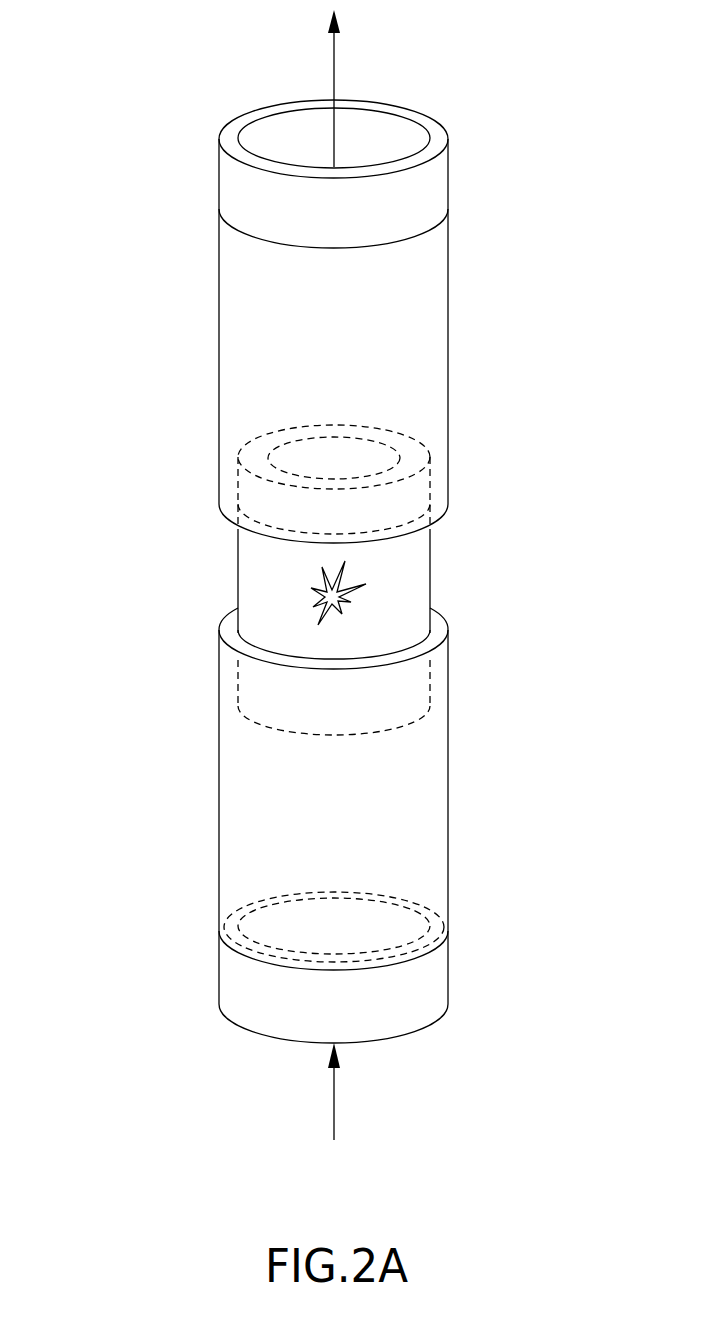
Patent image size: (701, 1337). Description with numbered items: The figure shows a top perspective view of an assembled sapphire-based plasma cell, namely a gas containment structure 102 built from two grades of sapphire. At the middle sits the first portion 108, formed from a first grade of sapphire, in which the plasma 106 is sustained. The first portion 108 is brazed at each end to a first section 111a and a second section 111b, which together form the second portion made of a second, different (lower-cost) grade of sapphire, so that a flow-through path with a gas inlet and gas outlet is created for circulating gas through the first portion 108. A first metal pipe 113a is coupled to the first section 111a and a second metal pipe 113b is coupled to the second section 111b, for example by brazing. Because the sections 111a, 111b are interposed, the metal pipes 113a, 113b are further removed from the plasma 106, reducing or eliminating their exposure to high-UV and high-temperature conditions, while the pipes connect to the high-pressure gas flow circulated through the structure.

The gas containment structure 102 is at (121, 38).
The plasma 106 is at (366, 584).
The first portion 108 is at (238, 577).
The first section 111a is at (219, 823).
The second section 111b is at (219, 325).
The first metal pipe 113a is at (219, 973).
The second metal pipe 113b is at (219, 183).